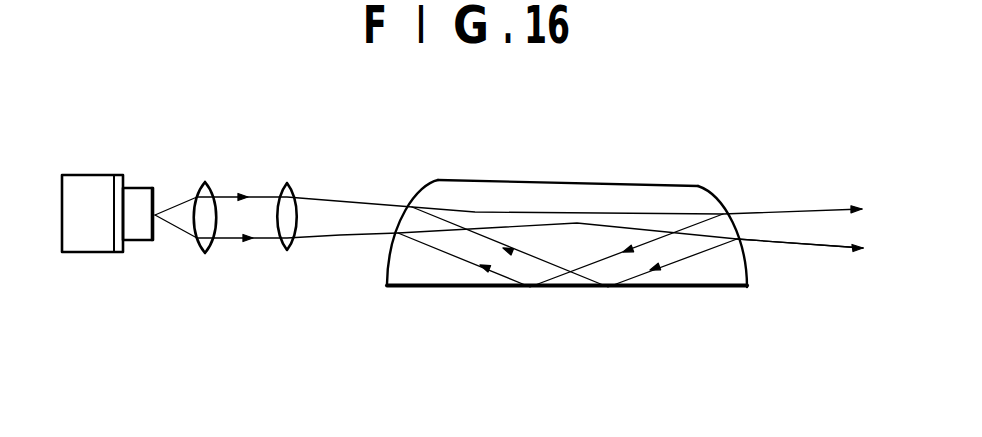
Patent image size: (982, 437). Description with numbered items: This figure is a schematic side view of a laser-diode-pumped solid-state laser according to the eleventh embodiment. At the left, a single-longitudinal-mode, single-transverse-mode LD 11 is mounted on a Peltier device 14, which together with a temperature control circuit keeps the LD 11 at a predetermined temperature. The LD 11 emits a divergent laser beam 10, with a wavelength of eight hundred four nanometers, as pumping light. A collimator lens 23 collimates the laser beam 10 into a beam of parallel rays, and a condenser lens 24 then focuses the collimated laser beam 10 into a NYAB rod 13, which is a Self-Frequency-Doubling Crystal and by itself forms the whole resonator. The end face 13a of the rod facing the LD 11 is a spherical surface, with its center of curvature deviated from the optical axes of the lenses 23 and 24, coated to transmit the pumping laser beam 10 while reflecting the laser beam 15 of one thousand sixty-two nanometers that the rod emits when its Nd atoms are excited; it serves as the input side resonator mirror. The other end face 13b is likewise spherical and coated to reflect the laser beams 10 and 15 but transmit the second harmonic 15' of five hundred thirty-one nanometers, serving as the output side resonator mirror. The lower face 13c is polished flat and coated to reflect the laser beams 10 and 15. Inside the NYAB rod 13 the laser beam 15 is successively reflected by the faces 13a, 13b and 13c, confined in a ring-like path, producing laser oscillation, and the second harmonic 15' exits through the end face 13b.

The laser beam 10 is at (262, 197).
The LD 11 is at (151, 187).
The NYAB rod 13 is at (569, 230).
The end face 13a is at (418, 193).
The other end face 13b is at (720, 200).
The lower face 13c is at (650, 290).
The Peltier device 14 is at (92, 182).
The laser beam 15 is at (567, 277).
The second harmonic 15' is at (800, 273).
The collimator lens 23 is at (200, 253).
The condenser lens 24 is at (288, 250).